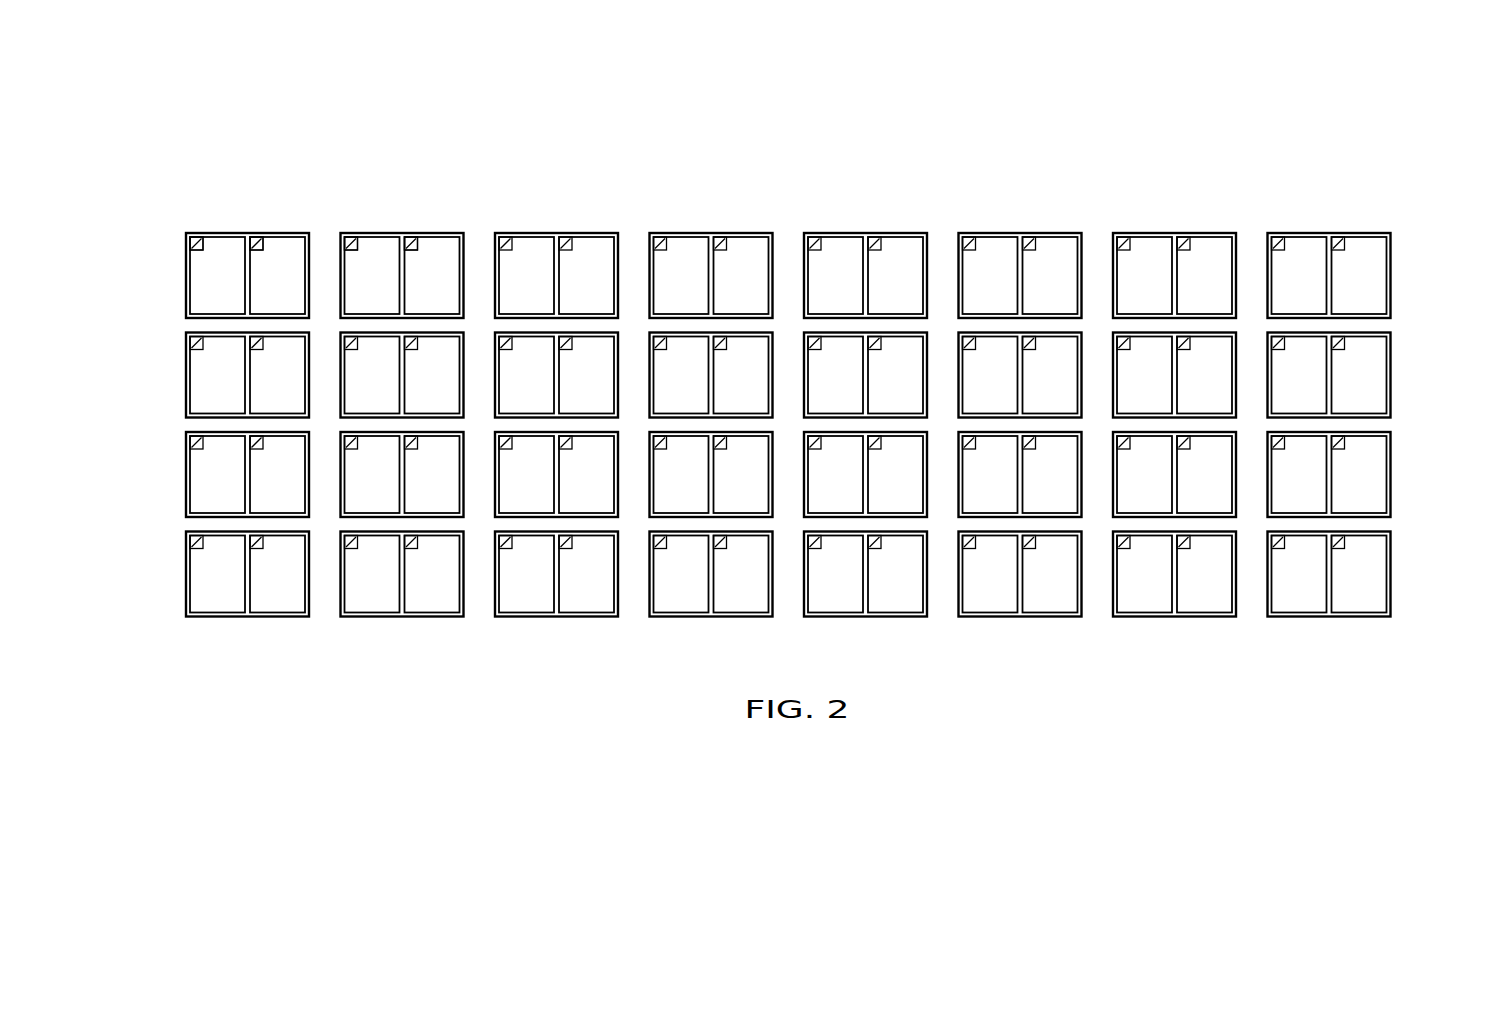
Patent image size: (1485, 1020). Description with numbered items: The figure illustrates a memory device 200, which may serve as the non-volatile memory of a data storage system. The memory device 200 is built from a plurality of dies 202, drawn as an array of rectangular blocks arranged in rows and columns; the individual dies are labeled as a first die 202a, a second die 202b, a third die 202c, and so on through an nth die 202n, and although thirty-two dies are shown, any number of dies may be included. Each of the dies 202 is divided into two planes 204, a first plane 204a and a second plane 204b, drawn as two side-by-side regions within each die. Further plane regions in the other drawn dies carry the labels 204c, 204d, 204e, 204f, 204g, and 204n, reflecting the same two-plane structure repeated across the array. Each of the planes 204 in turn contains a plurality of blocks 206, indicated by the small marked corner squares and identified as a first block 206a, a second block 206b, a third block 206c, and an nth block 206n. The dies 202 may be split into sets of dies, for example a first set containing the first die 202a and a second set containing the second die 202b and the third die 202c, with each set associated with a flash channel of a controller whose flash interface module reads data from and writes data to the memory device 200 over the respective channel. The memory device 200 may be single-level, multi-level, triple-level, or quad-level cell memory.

The memory device 200 is at (210, 64).
The dies 202 is at (506, 232).
The first die 202a is at (185, 275).
The second die 202b is at (185, 374).
The third die 202c is at (185, 474).
The nth die 202n is at (185, 574).
The planes 204 is at (388, 293).
The first plane 204a is at (192, 303).
The second plane 204b is at (251, 303).
The memory page P2 204c is at (192, 402).
The memory page P5 204d is at (251, 402).
The memory page P4 204e is at (192, 502).
The memory page P7 204f is at (251, 502).
The memory page P6 204g is at (192, 602).
The memory page Pn 204n is at (251, 602).
The block 206 is at (564, 236).
The first block 206a is at (197, 236).
The second block 206b is at (258, 236).
The third block 206c is at (353, 236).
The nth block 206n is at (411, 236).